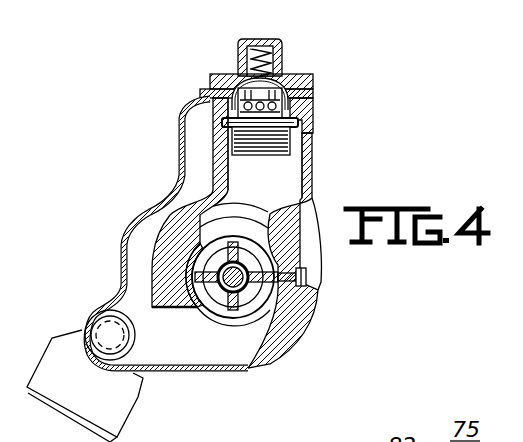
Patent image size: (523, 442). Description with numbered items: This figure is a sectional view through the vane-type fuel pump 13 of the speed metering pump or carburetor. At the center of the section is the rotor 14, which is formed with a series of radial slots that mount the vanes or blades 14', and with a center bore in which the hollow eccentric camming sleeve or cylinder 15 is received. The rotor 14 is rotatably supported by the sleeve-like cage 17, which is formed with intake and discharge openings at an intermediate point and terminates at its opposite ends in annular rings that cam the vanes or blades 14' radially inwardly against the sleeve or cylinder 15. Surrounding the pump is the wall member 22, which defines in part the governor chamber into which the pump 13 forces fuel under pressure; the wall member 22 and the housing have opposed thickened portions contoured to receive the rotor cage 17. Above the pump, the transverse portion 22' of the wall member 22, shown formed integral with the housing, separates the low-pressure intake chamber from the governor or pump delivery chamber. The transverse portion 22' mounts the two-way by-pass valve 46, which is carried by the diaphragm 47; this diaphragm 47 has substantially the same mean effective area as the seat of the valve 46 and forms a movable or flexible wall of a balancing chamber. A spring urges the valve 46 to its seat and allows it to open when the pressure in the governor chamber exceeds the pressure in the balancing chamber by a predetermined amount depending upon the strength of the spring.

The fuel pump 13 is at (188, 263).
The rotor 14 is at (275, 283).
The vanes or blades 14' is at (236, 302).
The eccentric camming sleeve or cylinder 15 is at (217, 303).
The sleeve-like cage 17 is at (307, 290).
The wall member 22 is at (204, 233).
The transverse portion 22' is at (265, 148).
The two-way by-pass valve 46 is at (290, 119).
The diaphragm 47 is at (313, 98).